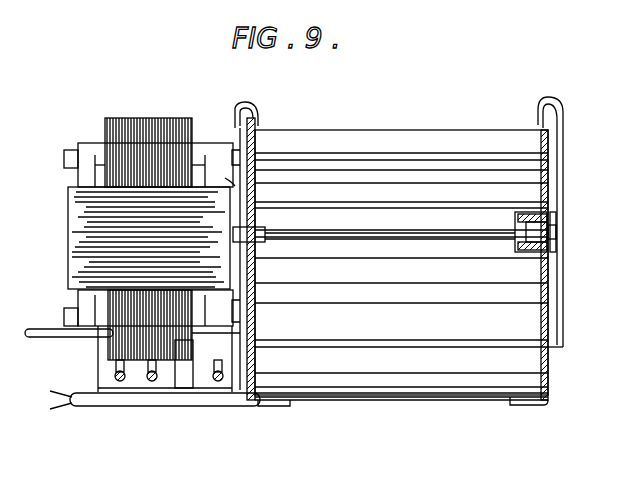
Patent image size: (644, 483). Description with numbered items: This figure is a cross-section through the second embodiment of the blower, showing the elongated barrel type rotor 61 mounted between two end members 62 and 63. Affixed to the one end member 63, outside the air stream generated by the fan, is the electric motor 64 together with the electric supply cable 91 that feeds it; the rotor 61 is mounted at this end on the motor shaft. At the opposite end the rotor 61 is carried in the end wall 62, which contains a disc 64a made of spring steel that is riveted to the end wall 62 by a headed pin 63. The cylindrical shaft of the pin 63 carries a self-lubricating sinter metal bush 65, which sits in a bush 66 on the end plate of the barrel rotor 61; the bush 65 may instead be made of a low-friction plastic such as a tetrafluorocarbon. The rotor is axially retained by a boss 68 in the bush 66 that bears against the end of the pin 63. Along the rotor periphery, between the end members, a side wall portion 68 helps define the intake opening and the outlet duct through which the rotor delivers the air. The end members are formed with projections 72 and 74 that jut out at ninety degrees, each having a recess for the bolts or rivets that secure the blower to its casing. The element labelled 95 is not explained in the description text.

The rotor 61 is at (347, 148).
The end member 62 is at (548, 150).
The end member 63 is at (255, 118).
The electric motor 64 is at (150, 138).
The disc 64a is at (548, 262).
The bush 65 is at (552, 245).
The bush 66 is at (545, 248).
The boss 68 is at (548, 290).
The projection 72 is at (548, 402).
The projection 74 is at (263, 402).
The electric supply cable 91 is at (232, 182).
The terminal block 95 is at (106, 372).